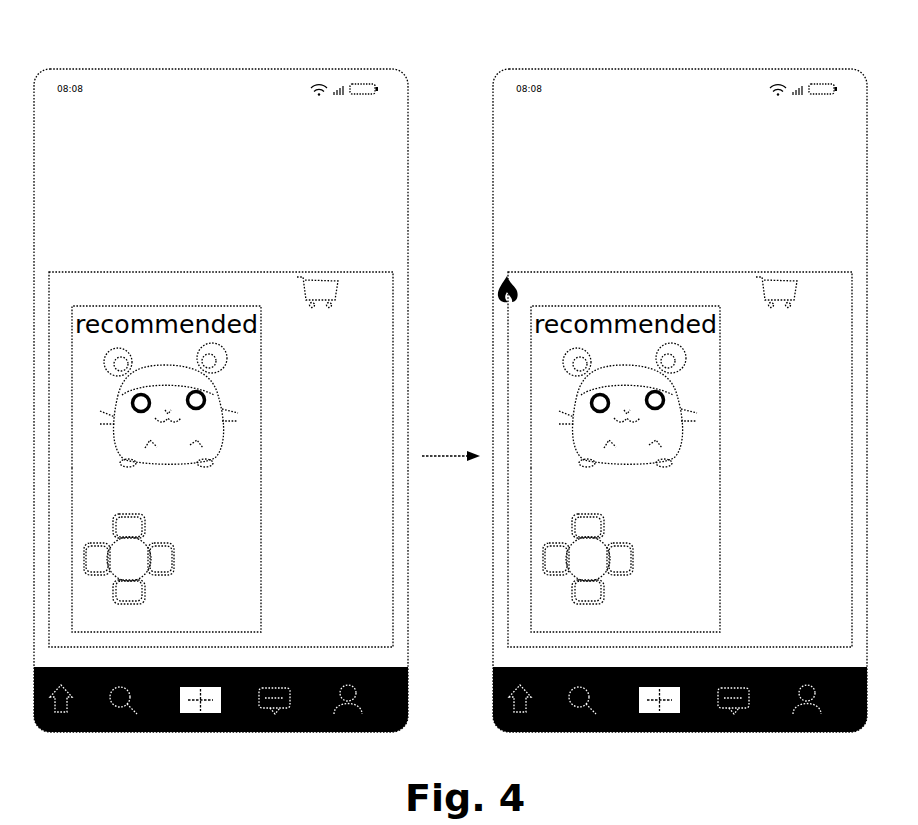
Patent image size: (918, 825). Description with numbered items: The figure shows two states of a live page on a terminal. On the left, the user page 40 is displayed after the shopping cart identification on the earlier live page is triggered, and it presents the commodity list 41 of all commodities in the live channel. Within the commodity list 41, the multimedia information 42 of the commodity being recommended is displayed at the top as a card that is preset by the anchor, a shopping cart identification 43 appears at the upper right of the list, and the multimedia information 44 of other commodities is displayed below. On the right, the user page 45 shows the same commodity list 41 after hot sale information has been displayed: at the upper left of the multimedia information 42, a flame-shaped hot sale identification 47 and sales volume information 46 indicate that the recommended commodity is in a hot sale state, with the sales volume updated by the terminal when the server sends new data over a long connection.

The user page 40 is at (224, 69).
The commodity list 41 is at (393, 272).
The multimedia information of a commodity being recommended 42 is at (165, 306).
The shopping cart identification 43 is at (305, 295).
The multimedia information of other commodities 44 is at (261, 550).
The user page 45 is at (683, 69).
The sales volume information 46 is at (548, 296).
The hot sale identification 47 is at (500, 280).